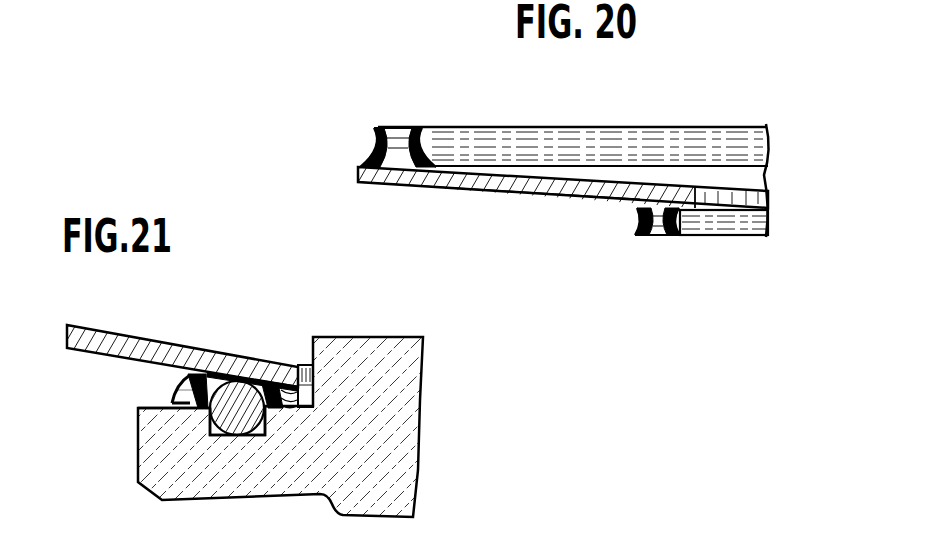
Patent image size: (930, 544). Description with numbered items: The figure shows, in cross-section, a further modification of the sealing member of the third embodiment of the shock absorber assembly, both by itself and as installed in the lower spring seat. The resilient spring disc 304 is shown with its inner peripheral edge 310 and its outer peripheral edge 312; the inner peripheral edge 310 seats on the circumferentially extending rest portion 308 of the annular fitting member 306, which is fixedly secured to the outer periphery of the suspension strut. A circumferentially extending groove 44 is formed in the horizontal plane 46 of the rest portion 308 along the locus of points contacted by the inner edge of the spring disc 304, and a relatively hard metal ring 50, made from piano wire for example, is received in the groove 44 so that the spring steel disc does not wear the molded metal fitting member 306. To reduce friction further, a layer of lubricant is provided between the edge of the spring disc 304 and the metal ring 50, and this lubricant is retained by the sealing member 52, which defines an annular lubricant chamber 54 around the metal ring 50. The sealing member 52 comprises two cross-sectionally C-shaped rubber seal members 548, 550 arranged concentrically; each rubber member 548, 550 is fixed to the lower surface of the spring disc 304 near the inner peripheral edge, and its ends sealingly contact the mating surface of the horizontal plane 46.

In FIG. 20, the spring disc 304 is at (543, 200).
In FIG. 21, the spring disc 304 is at (116, 338).
In FIG. 21, the fitting member 306 is at (403, 442).
In FIG. 21, the rest portion 308 is at (155, 384).
In FIG. 20, the inner peripheral edge 310 is at (663, 188).
In FIG. 21, the inner peripheral edge 310 is at (310, 352).
In FIG. 20, the outer peripheral edge 312 is at (408, 186).
In FIG. 21, the groove 44 is at (212, 440).
In FIG. 21, the horizontal plane 46 is at (152, 408).
In FIG. 21, the metal ring 50 is at (240, 436).
In FIG. 20, the sealing member 52 is at (403, 112).
In FIG. 21, the annular lubricant chamber 54 is at (228, 372).
In FIG. 20, the rubber seal member 548 is at (372, 148).
In FIG. 21, the rubber seal member 548 is at (185, 388).
In FIG. 20, the rubber seal member 550 is at (438, 150).
In FIG. 21, the rubber seal member 550 is at (313, 400).